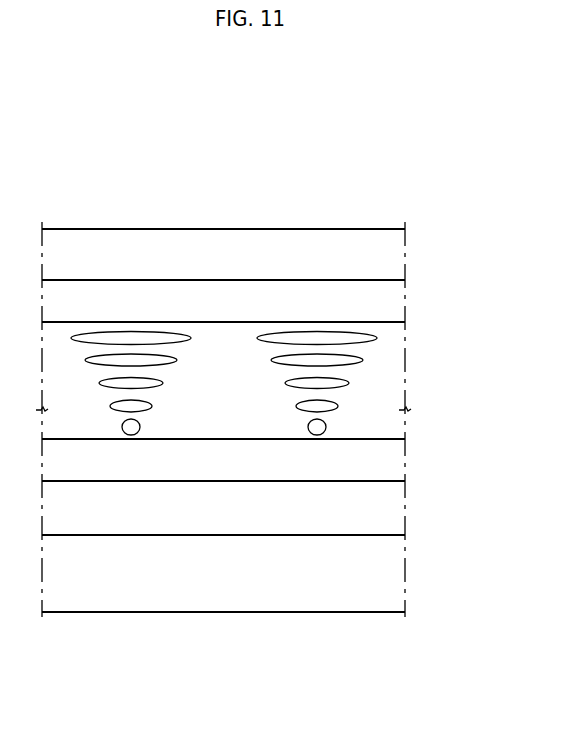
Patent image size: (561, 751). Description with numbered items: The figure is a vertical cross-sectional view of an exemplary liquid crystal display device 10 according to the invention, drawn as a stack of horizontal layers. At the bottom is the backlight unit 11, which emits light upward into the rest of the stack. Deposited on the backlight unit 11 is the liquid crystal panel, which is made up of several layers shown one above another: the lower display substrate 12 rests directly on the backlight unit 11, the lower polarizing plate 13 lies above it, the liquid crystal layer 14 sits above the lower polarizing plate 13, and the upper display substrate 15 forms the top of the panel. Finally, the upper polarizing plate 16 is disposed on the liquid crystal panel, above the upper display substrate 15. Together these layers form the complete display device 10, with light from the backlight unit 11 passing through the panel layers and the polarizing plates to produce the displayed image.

The liquid crystal display device 10 is at (274, 184).
The backlight unit 11 is at (397, 578).
The lower display substrate 12 is at (397, 510).
The lower polarizing plate 13 is at (397, 462).
The liquid crystal layer 14 is at (397, 378).
The upper display substrate 15 is at (397, 305).
The upper polarizing plate 16 is at (397, 259).